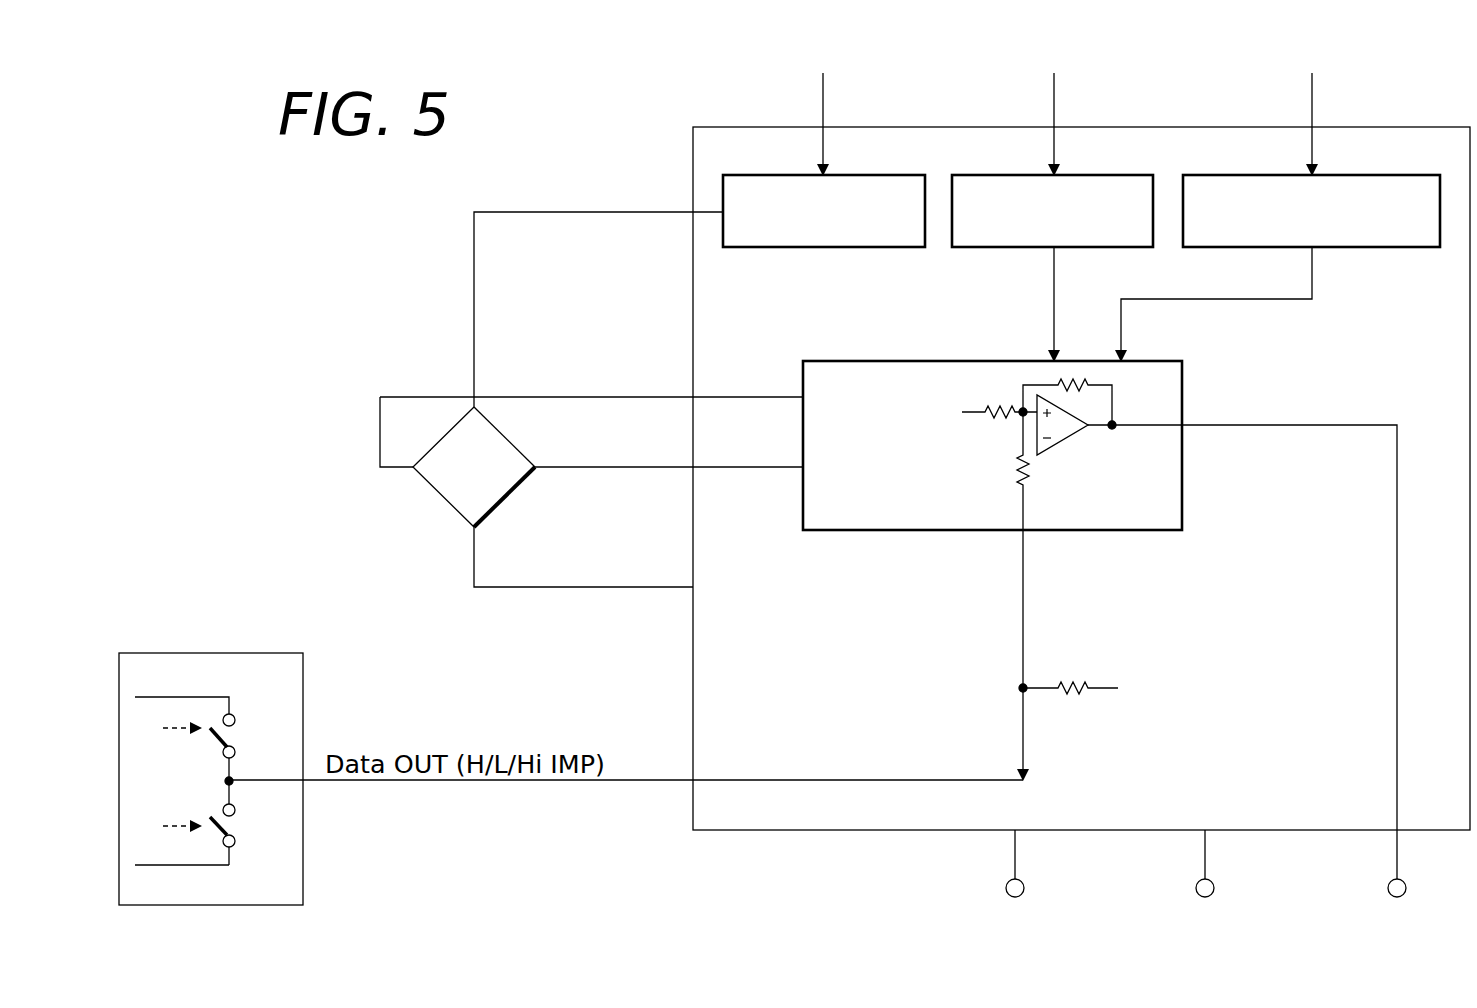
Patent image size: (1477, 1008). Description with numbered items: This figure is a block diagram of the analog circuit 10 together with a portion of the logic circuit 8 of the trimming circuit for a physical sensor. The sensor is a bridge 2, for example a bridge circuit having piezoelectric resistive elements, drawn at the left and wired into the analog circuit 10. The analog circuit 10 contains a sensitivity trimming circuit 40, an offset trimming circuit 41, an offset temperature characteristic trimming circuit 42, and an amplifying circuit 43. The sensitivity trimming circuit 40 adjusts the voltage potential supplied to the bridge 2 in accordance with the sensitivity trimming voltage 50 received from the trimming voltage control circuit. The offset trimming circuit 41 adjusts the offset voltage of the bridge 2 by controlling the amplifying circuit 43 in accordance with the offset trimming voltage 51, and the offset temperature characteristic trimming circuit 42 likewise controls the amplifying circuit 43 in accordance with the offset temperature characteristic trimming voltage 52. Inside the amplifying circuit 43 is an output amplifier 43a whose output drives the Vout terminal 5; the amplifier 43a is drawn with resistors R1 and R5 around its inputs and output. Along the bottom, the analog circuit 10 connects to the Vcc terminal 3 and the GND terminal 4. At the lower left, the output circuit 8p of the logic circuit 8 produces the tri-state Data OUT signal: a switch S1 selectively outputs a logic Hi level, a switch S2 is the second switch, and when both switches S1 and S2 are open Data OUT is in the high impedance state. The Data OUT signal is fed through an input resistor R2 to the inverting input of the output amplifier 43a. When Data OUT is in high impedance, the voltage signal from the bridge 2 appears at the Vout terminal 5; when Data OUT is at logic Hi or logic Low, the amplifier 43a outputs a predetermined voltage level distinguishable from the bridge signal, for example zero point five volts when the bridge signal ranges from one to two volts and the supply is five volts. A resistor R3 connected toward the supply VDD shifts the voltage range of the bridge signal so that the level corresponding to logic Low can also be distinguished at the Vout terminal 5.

The bridge circuit 2 is at (507, 432).
The Vcc terminal 3 is at (1198, 882).
The GND terminal 4 is at (1007, 882).
The Vout terminal 5 is at (1390, 882).
The logic circuit 8 is at (285, 761).
The output circuit 8p is at (222, 687).
The analog circuit 10 is at (742, 127).
The sensitivity trimming circuit 40 is at (868, 172).
The offset trimming circuit 41 is at (1093, 172).
The offset temperature characteristic trimming circuit 42 is at (1378, 172).
The amplifying circuit 43 is at (846, 361).
The output amplifier 43a is at (1060, 440).
The sensitivity trimming voltage 50 is at (824, 104).
The offset trimming input 51 is at (1055, 104).
The offset temperature characteristic trimming input 52 is at (1313, 104).
The resistor R1 is at (984, 408).
The input resistor R2 is at (1020, 462).
The resistor R3 is at (1065, 682).
The resistor R5 is at (1080, 379).
The switch S1 is at (238, 735).
The switch S2 is at (238, 822).